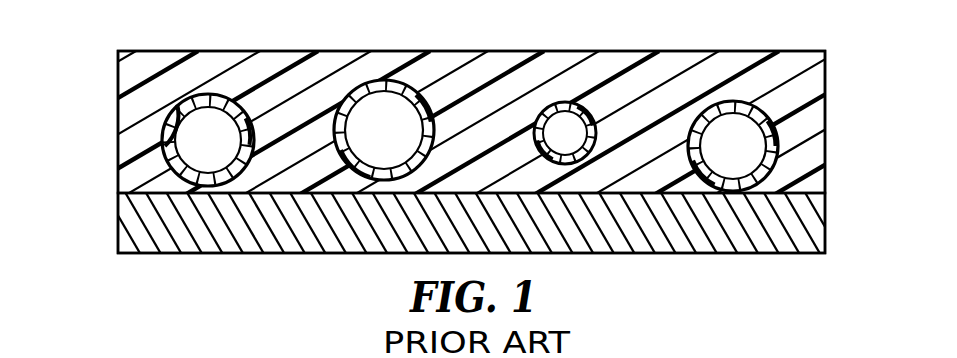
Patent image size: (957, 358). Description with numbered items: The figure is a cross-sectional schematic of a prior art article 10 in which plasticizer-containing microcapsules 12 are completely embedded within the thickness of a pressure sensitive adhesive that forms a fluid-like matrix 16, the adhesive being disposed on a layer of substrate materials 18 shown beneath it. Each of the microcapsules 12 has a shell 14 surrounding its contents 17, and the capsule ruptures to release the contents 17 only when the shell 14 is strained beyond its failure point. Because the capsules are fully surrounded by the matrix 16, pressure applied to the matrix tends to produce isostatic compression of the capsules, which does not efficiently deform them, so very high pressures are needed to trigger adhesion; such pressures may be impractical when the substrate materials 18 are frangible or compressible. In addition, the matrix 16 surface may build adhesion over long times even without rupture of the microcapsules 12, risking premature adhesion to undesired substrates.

The article 10 is at (84, 76).
The microcapsules 12 is at (558, 118).
The shell 14 is at (367, 90).
The matrix 16 is at (603, 66).
The contents 17 is at (398, 146).
The substrate materials 18 is at (127, 223).